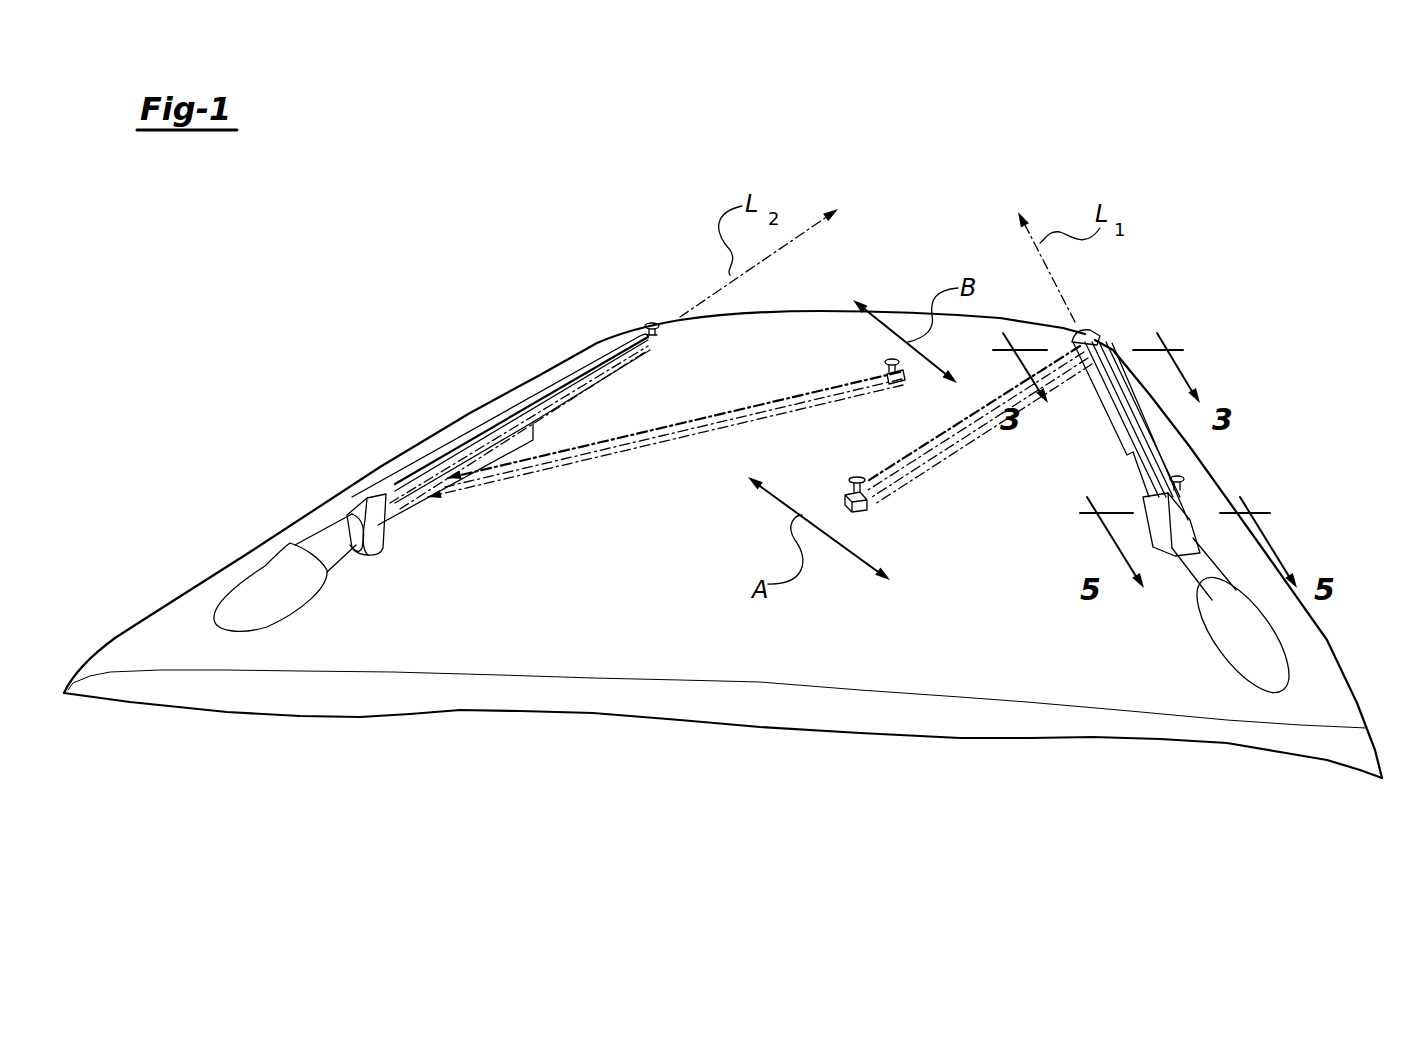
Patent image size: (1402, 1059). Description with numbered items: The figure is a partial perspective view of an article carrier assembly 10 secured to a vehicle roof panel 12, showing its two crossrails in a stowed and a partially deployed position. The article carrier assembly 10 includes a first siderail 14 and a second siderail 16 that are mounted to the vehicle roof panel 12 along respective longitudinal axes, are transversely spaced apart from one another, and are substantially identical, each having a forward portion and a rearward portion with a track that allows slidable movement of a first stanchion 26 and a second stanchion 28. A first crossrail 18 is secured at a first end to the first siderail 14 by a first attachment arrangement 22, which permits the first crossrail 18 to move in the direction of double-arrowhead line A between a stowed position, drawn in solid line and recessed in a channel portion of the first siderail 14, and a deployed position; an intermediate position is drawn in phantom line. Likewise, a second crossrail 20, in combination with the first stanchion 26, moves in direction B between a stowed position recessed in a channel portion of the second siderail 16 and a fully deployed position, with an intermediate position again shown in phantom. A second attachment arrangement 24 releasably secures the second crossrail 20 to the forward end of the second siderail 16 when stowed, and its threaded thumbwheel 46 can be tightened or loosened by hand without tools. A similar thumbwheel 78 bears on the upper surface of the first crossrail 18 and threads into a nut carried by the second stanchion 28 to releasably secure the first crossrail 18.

The article carrier assembly 10 is at (723, 504).
The vehicle roof panel 12 is at (780, 312).
The first siderail 14 is at (1190, 497).
The second siderail 16 is at (554, 433).
The first crossrail 18 is at (1071, 487).
The second crossrail 20 is at (672, 375).
The first attachment arrangement 22 is at (1103, 343).
The second attachment arrangement 24 is at (651, 308).
The first stanchion 26 is at (275, 567).
The second stanchion 28 is at (1160, 592).
The thumbwheel 46 is at (885, 362).
The thumbwheel 78 is at (872, 483).